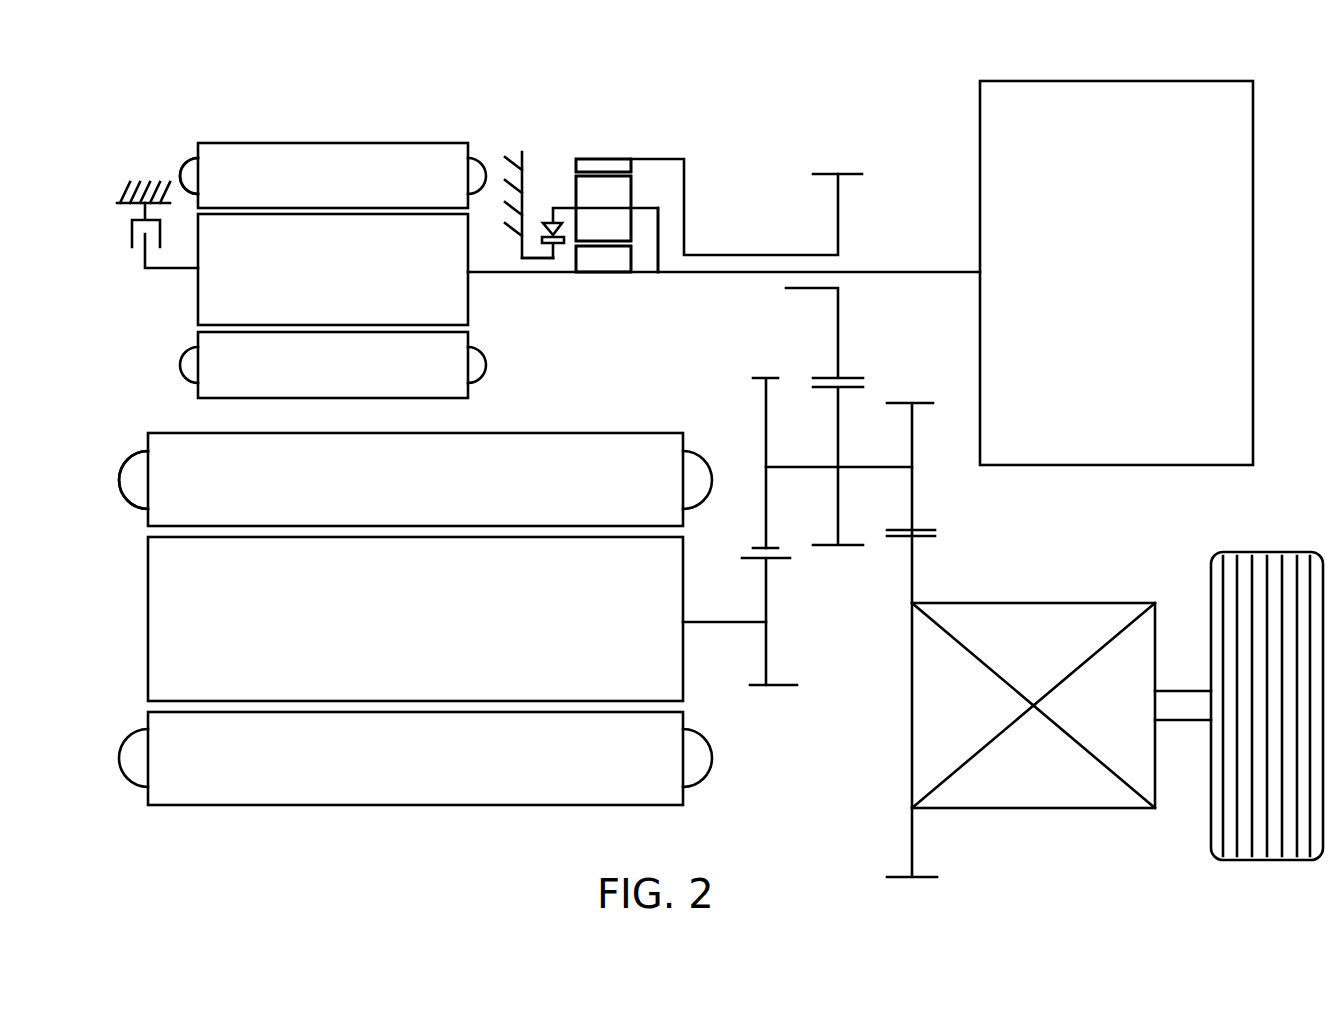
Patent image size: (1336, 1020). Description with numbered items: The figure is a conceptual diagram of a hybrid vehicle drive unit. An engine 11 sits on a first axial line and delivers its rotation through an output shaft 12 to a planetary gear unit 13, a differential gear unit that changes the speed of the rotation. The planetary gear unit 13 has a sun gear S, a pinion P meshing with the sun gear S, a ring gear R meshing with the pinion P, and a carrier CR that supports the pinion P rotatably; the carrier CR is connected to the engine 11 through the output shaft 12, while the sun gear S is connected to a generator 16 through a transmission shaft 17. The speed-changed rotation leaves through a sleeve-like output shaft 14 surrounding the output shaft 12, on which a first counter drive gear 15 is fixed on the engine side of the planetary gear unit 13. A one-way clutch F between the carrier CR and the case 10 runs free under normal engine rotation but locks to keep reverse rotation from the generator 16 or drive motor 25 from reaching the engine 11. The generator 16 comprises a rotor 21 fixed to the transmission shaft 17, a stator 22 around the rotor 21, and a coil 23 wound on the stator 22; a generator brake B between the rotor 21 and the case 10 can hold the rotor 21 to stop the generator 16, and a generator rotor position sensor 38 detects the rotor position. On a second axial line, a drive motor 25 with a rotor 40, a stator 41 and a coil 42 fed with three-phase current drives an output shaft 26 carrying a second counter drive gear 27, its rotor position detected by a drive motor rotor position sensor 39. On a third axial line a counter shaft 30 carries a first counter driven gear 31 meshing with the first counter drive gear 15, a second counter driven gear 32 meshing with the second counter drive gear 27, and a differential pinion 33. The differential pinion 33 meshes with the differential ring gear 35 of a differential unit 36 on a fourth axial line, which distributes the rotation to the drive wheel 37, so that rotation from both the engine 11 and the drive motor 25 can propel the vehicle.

The case 10 is at (122, 187).
The engine 11 is at (1033, 81).
The output shaft 12 is at (907, 271).
The planetary gear unit 13 is at (653, 136).
The output shaft 14 is at (741, 255).
The first counter drive gear 15 is at (853, 174).
The generator 16 is at (332, 112).
The transmission shaft 17 is at (547, 274).
The rotor 21 is at (198, 298).
The stator 22 is at (232, 143).
The coil 23 is at (185, 160).
The drive motor 25 is at (437, 822).
The output shaft 26 is at (722, 624).
The second counter drive gear 27 is at (789, 688).
The counter shaft 30 is at (793, 467).
The first counter driven gear 31 is at (855, 548).
The second counter driven gear 32 is at (752, 378).
The differential pinion 33 is at (898, 403).
The differential ring gear 35 is at (933, 535).
The differential unit 36 is at (1070, 600).
The drive wheel 37 is at (1286, 552).
The generator rotor position sensor 38 is at (492, 287).
The drive motor rotor position sensor 39 is at (718, 610).
The rotor 40 is at (148, 623).
The stator 41 is at (153, 432).
The coil 42 is at (120, 481).
The generator brake B is at (132, 240).
The one-way clutch F is at (551, 222).
The ring gear R is at (591, 159).
The pinion P is at (612, 202).
The sun gear S is at (610, 262).
The carrier CR is at (653, 262).